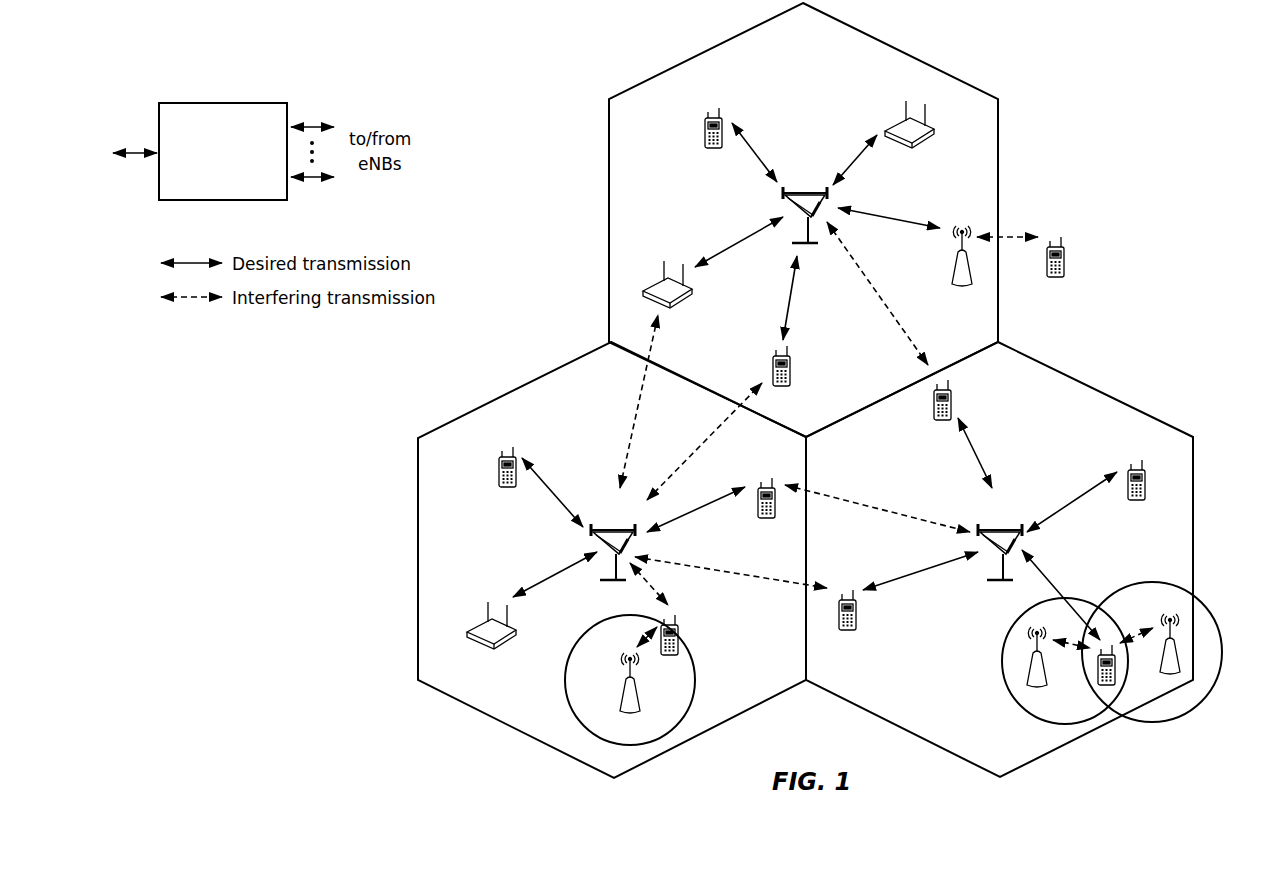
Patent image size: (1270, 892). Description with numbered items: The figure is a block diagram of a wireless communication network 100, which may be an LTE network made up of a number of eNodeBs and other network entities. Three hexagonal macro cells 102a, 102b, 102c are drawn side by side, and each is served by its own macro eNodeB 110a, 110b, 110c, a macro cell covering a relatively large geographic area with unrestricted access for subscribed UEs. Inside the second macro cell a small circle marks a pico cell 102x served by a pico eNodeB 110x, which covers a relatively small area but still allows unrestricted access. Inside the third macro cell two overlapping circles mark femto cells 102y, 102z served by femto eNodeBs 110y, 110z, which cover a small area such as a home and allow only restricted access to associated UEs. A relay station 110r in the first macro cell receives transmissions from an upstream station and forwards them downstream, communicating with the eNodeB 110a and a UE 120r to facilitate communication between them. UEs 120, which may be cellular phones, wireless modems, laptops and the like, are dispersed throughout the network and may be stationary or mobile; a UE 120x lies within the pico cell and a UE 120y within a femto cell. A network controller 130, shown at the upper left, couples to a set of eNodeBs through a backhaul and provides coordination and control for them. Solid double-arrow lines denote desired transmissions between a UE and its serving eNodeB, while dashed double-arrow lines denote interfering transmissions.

The wireless communication network 100 is at (1128, 66).
The macro cell 102a is at (912, 38).
The macro cell 102b is at (514, 390).
The macro cell 102c is at (1108, 375).
The pico cell 102x is at (588, 631).
The femto cell 102y is at (1006, 630).
The femto cell 102z is at (1152, 582).
The macro eNodeB 110a is at (800, 191).
The macro eNodeB 110b is at (609, 529).
The macro eNodeB 110c is at (999, 529).
The relay station 110r is at (950, 269).
The pico eNodeB 110x is at (638, 705).
The femto eNodeB 110y is at (1045, 684).
The femto eNodeB 110z is at (1178, 671).
The UE 120 is at (705, 125).
The UE 120r is at (1064, 272).
The UE 120x is at (679, 634).
The UE 120y is at (1098, 686).
The network controller 130 is at (230, 91).